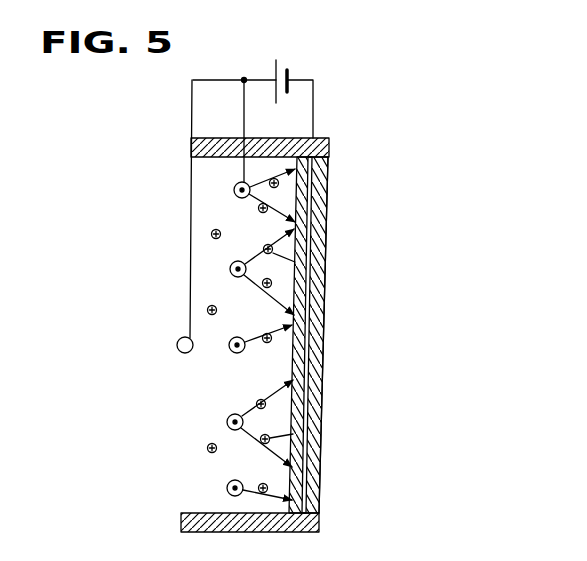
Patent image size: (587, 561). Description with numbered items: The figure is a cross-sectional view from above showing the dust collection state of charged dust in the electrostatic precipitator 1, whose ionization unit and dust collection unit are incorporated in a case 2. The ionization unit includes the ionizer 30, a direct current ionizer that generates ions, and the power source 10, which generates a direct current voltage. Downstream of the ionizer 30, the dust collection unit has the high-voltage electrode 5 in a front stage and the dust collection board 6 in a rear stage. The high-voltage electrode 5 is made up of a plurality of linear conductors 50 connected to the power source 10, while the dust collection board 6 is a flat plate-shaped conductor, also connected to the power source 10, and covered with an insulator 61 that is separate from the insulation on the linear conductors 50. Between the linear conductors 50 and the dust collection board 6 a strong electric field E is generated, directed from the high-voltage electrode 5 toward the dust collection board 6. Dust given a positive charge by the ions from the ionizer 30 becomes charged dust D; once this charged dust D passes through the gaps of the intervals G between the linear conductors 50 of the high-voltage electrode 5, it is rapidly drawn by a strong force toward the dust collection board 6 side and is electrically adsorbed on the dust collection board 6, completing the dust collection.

The electrostatic precipitator 1 is at (392, 150).
The case 2 is at (328, 143).
The high-voltage electrode 5 is at (217, 483).
The dust collection board 6 is at (313, 365).
The power source 10 is at (280, 66).
The ionizer 30 is at (177, 345).
The linear conductor 50 is at (230, 269).
The insulator 61 is at (323, 398).
The interval G is at (243, 228).
The charged dust D is at (217, 310).
The electric field E is at (305, 247).